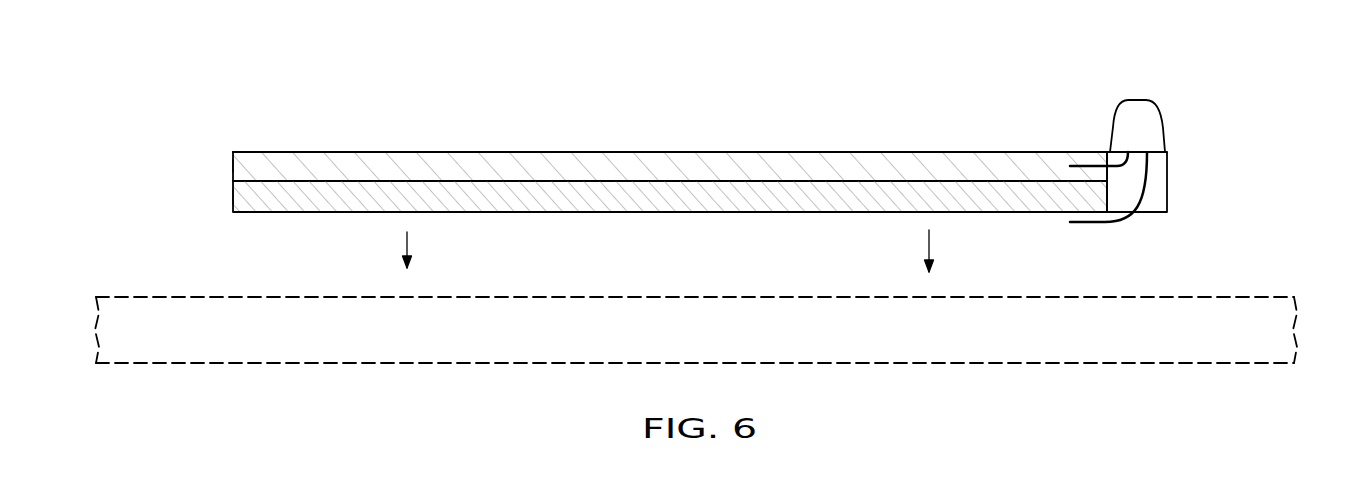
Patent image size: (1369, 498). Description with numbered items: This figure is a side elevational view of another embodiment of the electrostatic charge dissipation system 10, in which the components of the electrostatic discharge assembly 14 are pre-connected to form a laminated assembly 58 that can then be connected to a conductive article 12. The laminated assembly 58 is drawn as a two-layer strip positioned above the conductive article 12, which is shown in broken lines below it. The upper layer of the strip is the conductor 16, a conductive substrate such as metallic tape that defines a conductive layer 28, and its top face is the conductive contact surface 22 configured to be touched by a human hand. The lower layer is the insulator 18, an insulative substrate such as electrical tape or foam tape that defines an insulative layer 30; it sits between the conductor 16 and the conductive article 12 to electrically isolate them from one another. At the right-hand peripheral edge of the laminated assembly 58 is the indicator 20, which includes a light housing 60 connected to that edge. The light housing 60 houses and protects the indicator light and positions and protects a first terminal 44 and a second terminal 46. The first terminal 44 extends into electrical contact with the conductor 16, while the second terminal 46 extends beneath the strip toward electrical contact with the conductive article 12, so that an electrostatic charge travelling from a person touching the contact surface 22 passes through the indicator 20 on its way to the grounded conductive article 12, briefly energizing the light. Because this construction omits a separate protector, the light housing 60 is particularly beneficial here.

The electrostatic charge dissipation system 10 is at (1228, 79).
The conductive article 12 is at (1045, 363).
The electrostatic discharge assembly 14 is at (1163, 130).
The conductor 16 is at (625, 160).
The insulator 18 is at (653, 203).
The indicator 20 is at (1082, 106).
The conductive contact surface 22 is at (823, 152).
The conductive layer 28 is at (175, 154).
The insulative layer 30 is at (175, 208).
The first terminal 44 is at (1093, 157).
The second terminal 46 is at (1105, 223).
The laminated assembly 58 is at (203, 99).
The light housing 60 is at (1168, 182).